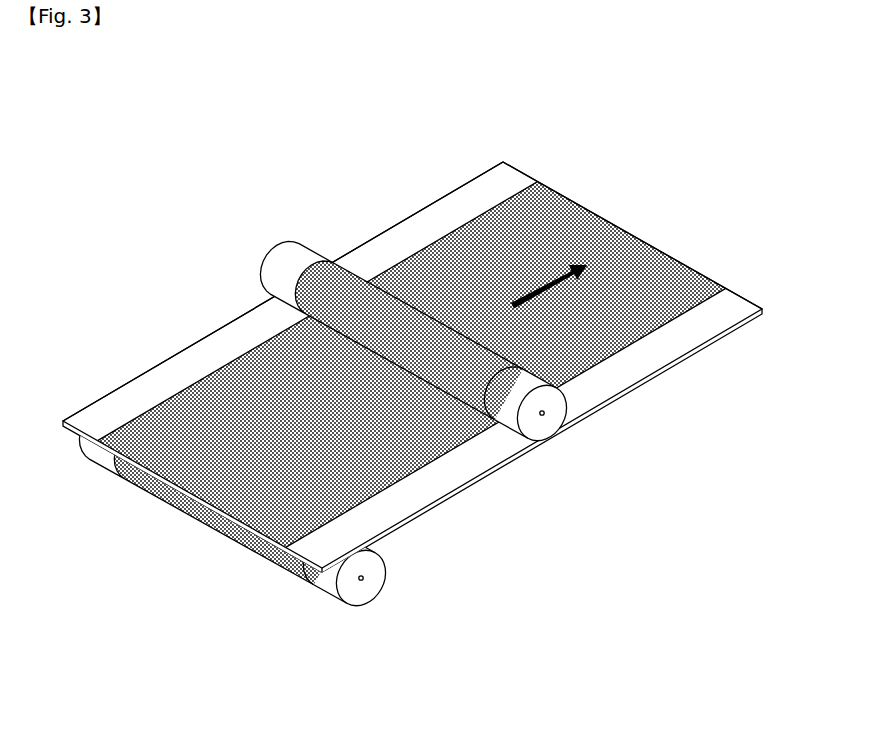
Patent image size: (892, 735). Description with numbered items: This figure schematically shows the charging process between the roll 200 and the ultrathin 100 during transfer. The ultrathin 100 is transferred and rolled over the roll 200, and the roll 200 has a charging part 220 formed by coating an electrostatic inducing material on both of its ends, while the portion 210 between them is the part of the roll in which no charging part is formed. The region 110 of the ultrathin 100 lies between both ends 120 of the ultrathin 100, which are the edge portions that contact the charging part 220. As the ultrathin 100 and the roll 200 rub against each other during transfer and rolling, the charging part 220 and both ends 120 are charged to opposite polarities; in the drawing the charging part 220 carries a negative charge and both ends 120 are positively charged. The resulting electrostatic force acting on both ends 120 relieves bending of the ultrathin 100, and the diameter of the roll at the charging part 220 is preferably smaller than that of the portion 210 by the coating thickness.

The ultrathin 100 is at (578, 95).
The coating region 110 is at (650, 253).
The both ends of the ultrathin 120 is at (517, 173).
The roll 200 is at (381, 416).
The portion in which the charging part is not formed 210 is at (363, 284).
The charging part 220 is at (297, 246).